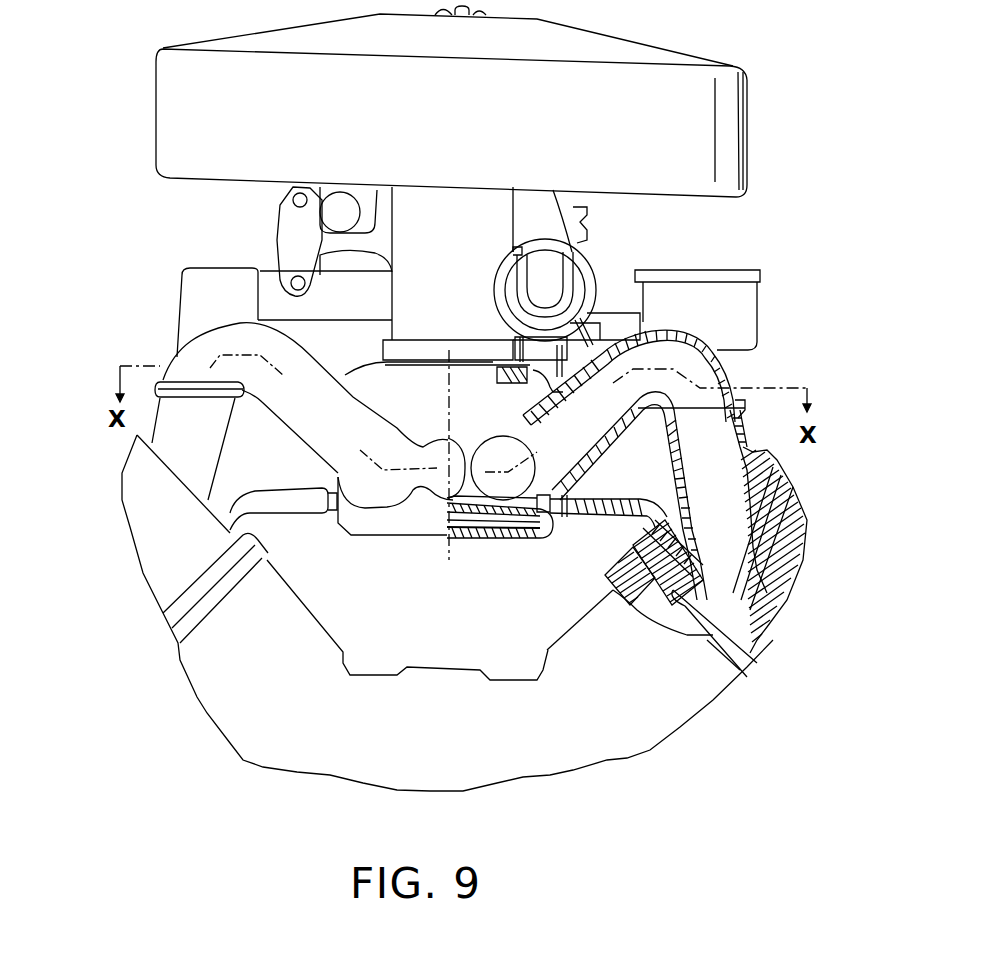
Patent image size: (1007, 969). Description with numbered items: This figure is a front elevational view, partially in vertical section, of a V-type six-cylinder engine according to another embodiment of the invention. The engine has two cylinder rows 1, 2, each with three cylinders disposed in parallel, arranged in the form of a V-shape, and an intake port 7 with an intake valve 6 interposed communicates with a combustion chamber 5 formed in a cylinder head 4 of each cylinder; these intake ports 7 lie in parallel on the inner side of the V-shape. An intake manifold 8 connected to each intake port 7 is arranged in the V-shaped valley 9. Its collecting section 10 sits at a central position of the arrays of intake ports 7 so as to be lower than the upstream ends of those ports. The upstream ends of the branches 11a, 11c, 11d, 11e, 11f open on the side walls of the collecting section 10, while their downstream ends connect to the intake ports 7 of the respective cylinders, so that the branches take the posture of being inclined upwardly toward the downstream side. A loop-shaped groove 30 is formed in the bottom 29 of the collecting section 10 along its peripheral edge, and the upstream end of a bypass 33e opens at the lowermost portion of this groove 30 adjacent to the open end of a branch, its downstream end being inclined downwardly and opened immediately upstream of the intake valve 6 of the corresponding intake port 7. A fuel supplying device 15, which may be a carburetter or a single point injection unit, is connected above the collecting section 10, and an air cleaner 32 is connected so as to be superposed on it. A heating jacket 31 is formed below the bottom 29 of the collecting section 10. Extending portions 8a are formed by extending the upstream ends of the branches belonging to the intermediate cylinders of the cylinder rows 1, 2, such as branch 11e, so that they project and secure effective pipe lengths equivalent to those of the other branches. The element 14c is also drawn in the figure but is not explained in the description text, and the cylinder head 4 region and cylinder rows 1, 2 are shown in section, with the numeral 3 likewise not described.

The cylinder row 1 is at (310, 602).
The cylinder row 2 is at (568, 623).
The cylinder head 3 is at (680, 623).
The cylinder head 4 is at (798, 527).
The combustion chamber 5 is at (747, 643).
The intake valve 6 is at (717, 602).
The intake port 7 is at (703, 476).
The intake manifold 8 is at (697, 329).
The extending portion 8a is at (550, 412).
The V-shaped valley 9 is at (458, 645).
The collecting section 10 is at (387, 400).
The branch 11a is at (463, 457).
The branch 11c is at (303, 367).
The branch 11d is at (433, 500).
The branch 11e is at (622, 418).
The branch 11f is at (560, 470).
The hose 14c is at (272, 497).
The fuel supplying device 15 is at (483, 227).
The bottom 29 is at (453, 512).
The loop-shaped groove 30 is at (512, 530).
The heating jacket 31 is at (475, 522).
The air cleaner 32 is at (735, 137).
The bypass 33e is at (603, 512).